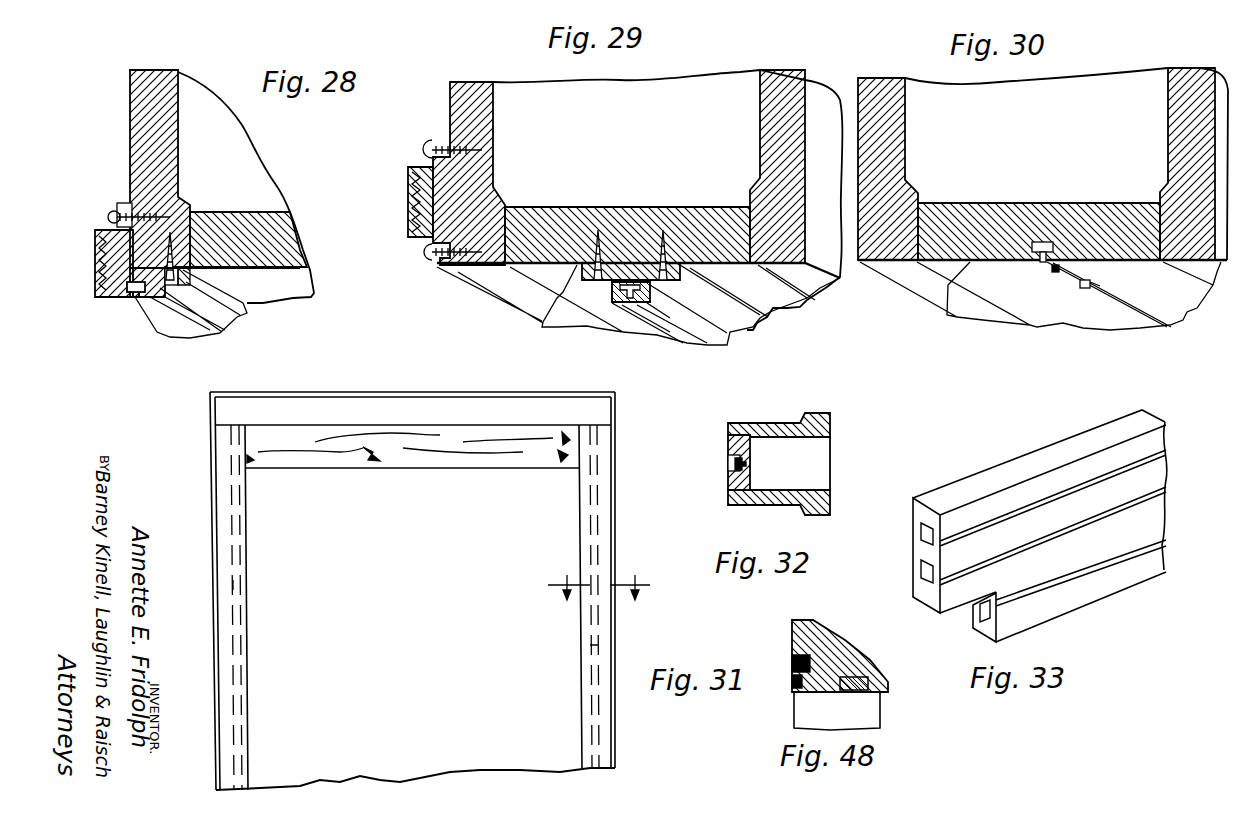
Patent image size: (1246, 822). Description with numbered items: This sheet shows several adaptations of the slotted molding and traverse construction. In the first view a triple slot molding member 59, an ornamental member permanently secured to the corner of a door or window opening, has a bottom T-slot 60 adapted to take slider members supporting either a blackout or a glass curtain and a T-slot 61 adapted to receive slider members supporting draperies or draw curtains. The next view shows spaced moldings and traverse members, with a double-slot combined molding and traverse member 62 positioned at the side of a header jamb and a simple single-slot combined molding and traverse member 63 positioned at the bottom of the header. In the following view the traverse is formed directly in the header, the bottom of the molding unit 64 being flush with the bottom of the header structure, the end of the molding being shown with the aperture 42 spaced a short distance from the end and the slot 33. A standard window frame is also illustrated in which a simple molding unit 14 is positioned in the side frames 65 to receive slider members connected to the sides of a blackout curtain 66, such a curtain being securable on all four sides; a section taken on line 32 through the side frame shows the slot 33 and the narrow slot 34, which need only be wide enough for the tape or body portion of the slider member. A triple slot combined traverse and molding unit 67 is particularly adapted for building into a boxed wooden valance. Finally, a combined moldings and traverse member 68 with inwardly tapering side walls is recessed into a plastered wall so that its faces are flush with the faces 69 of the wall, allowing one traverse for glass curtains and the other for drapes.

In FIG. 32, the molding unit 14 is at (728, 450).
In FIG. 31, the section line 32 is at (596, 573).
In FIG. 30, the slot 33 is at (1040, 242).
In FIG. 31, the slot 33 is at (245, 585).
In FIG. 32, the slot 33 is at (745, 465).
In FIG. 32, the narrow slot 34 is at (735, 465).
In FIG. 33, the narrow slot 34 is at (973, 525).
In FIG. 30, the aperture 42 is at (1095, 282).
In FIG. 28, the triple slot molding member 59 is at (153, 322).
In FIG. 28, the bottom T-slot 60 is at (130, 298).
In FIG. 28, the T-slot 61 is at (95, 285).
In FIG. 29, the combined molding and traverse member 62 is at (418, 238).
In FIG. 29, the combined molding and traverse member 63 is at (580, 283).
In FIG. 30, the molding unit 64 is at (957, 265).
In FIG. 31, the side frames 65 is at (225, 540).
In FIG. 32, the side frames 65 is at (785, 420).
In FIG. 31, the blackout curtain 66 is at (442, 455).
In FIG. 33, the triple slot combined traverse and molding unit 67 is at (1065, 445).
In FIG. 48, the combined moldings and traverse member 68 is at (800, 660).
In FIG. 48, the faces of the wall 69 is at (800, 690).